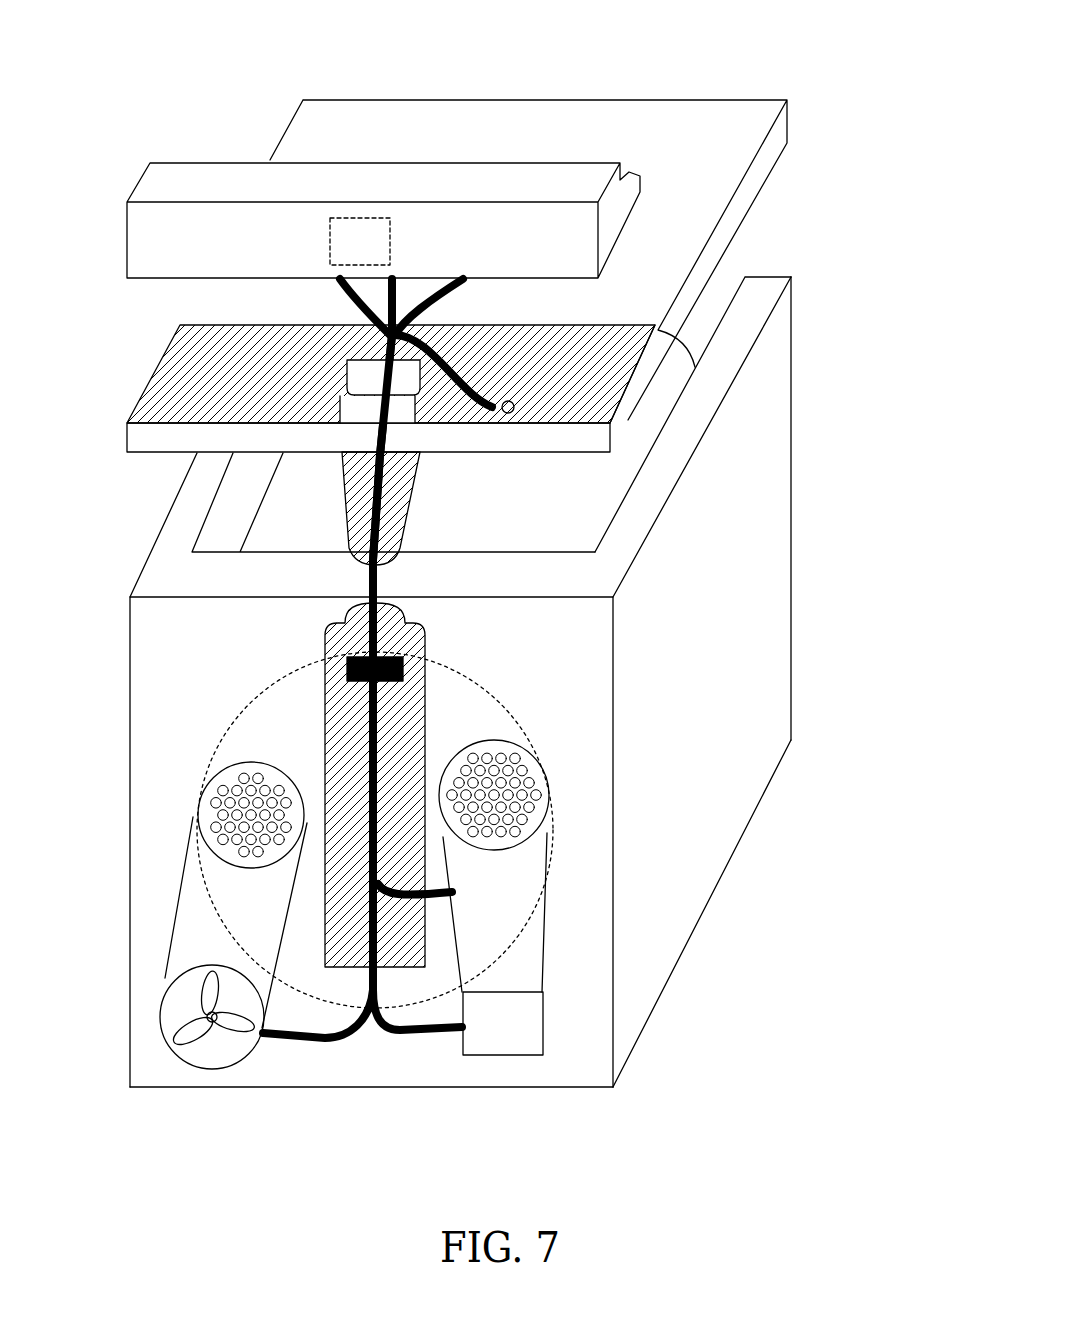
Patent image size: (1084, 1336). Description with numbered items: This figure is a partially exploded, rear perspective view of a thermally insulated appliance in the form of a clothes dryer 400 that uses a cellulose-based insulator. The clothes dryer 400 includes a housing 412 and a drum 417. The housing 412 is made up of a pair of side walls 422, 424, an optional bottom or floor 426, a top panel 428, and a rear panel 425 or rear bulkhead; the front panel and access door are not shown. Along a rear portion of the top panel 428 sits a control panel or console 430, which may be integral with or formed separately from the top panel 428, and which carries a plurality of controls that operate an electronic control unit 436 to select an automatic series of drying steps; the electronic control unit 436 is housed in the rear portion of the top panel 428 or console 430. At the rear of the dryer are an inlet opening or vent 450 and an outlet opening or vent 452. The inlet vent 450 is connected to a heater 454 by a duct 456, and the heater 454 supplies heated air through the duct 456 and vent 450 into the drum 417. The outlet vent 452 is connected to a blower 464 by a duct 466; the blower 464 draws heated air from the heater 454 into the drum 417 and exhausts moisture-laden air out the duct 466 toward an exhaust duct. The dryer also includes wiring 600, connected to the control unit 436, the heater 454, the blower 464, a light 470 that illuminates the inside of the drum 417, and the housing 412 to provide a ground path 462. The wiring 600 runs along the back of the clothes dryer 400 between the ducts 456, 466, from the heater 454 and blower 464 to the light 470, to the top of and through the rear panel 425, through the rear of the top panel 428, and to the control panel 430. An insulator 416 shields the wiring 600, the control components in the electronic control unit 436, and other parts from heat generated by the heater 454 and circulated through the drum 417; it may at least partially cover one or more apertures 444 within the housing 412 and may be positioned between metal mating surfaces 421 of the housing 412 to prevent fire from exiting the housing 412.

The clothes dryer 400 is at (783, 66).
The housing 412 is at (507, 649).
The insulator 416 is at (567, 337).
The drum 417 is at (290, 518).
The metal mating surfaces 421 is at (730, 243).
The side wall 422 is at (784, 498).
The side wall 424 is at (130, 765).
The rear panel 425 is at (600, 852).
The bottom 426 is at (355, 1090).
The top panel 428 is at (300, 133).
The control panel 430 is at (352, 193).
The electronic control unit 436 is at (347, 233).
The apertures 444 is at (425, 709).
The inlet opening or vent 450 is at (500, 760).
The outlet opening or vent 452 is at (238, 767).
The heater 454 is at (544, 1010).
The duct 456 is at (527, 950).
The ground path 462 is at (490, 412).
The blower 464 is at (160, 1008).
The duct 466 is at (193, 920).
The light 470 is at (418, 745).
The wiring 600 is at (412, 703).